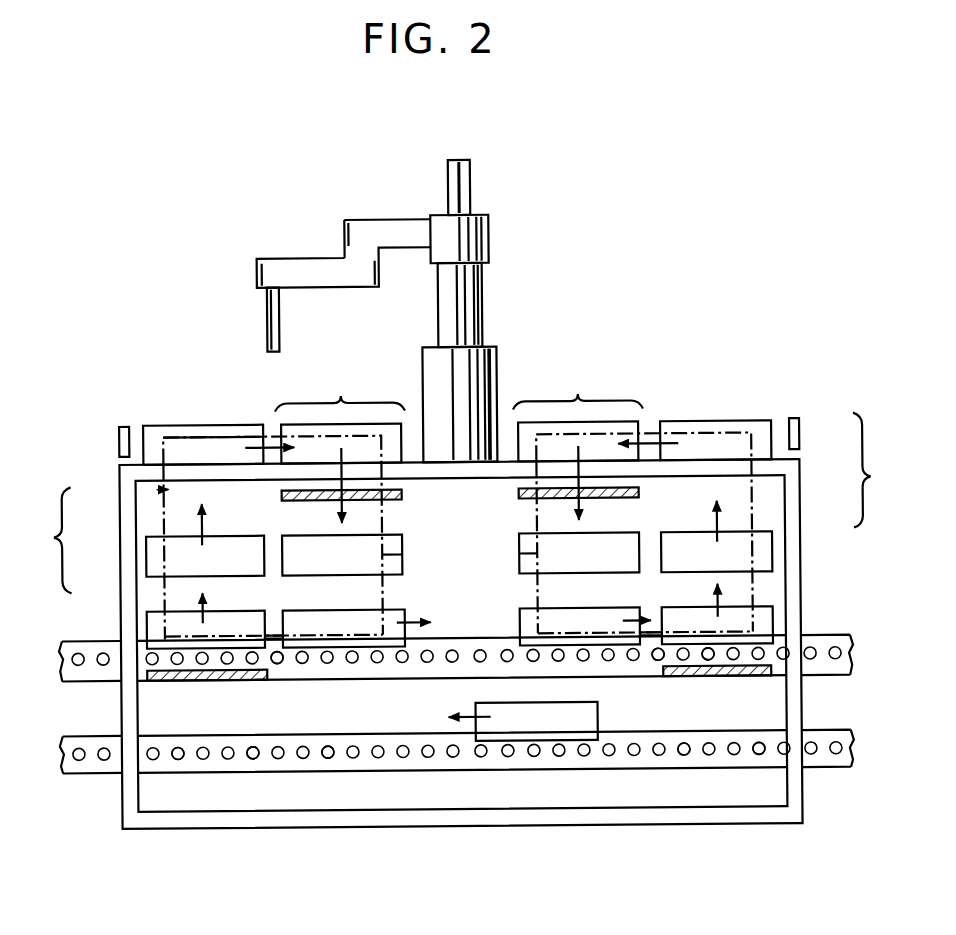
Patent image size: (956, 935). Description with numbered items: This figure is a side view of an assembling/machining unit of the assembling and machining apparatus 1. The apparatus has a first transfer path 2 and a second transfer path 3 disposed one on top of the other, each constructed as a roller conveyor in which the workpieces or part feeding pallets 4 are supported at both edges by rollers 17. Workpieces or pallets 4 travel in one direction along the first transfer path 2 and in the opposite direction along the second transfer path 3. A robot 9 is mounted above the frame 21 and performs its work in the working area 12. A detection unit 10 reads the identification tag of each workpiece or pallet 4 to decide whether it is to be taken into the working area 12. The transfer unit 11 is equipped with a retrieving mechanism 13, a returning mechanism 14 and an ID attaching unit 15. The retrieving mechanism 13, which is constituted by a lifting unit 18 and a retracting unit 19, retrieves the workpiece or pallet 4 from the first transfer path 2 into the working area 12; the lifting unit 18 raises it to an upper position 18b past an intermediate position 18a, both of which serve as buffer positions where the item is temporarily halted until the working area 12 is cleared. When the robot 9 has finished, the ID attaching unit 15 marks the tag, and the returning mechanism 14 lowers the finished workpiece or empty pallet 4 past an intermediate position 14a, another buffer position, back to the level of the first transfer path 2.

The assembling and machining apparatus 1 is at (672, 243).
The first transfer path 2 is at (820, 640).
The second transfer path 3 is at (838, 738).
The workpiece or part feeding pallet 4 is at (148, 423).
The robot 9 is at (488, 212).
The detection unit 10 is at (228, 680).
The transfer unit 11 is at (236, 435).
The working area 12 is at (459, 415).
The retrieving mechanism 13 is at (456, 503).
The returning mechanism 14 is at (345, 510).
The intermediate position 14a is at (395, 562).
The ID attaching unit 15 is at (404, 494).
The roller 17 is at (278, 662).
The lifting unit 18 is at (194, 597).
The intermediate position 18a is at (240, 534).
The upper position 18b is at (190, 422).
The retracting unit 19 is at (123, 445).
The frame 21 is at (121, 615).